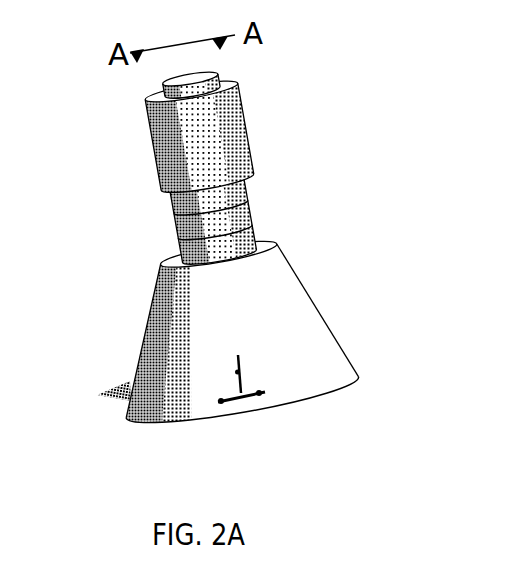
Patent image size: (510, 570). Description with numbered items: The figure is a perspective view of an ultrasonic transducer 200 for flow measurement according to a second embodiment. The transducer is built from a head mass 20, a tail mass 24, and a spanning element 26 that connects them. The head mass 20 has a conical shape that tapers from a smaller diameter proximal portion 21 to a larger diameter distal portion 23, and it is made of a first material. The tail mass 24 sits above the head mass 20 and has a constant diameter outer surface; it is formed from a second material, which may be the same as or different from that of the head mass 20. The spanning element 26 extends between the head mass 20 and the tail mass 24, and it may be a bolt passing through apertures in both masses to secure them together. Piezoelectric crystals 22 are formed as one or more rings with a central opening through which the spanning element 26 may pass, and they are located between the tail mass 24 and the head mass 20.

The ultrasonic transducer 200 is at (357, 70).
The head mass 20 is at (137, 356).
The proximal portion 21 is at (280, 245).
The piezoelectric crystals 22 is at (175, 222).
The distal portion 23 is at (357, 382).
The tail mass 24 is at (150, 133).
The spanning element 26 is at (163, 83).